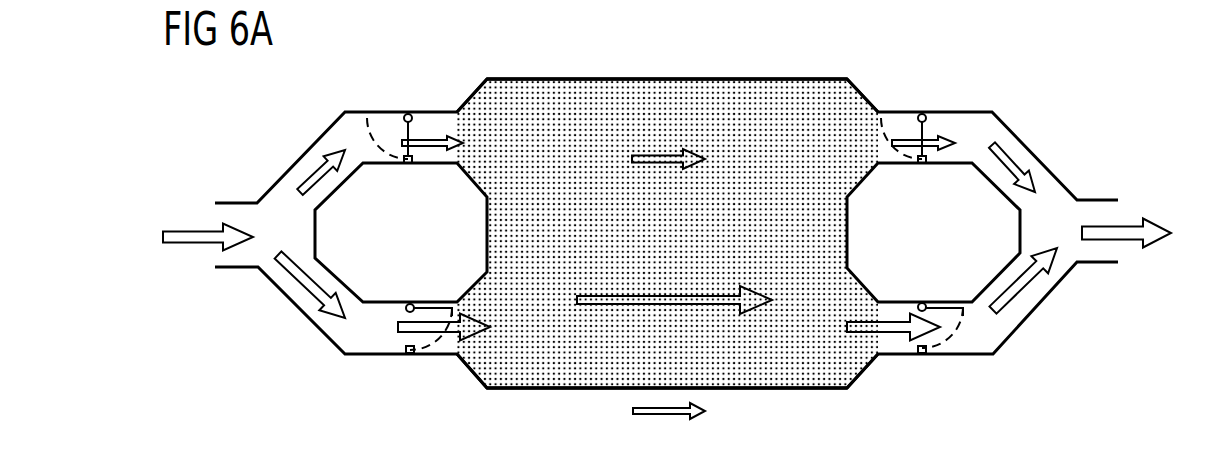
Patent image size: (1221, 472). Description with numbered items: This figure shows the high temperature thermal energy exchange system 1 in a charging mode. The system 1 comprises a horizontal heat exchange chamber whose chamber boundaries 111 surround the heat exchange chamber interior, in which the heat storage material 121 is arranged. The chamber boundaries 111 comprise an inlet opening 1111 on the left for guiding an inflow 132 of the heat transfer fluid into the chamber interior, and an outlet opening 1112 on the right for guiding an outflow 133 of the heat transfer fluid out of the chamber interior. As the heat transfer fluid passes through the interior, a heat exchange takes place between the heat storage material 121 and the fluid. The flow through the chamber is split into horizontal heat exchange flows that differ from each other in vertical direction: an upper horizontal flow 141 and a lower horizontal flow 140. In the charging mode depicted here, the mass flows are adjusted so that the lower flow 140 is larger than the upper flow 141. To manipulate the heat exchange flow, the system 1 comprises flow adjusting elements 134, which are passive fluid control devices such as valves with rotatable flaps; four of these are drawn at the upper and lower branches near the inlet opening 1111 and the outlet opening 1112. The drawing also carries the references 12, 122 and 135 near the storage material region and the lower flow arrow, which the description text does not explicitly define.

The high temperature thermal energy exchange system 1 is at (1141, 66).
The filter element 12 is at (536, 92).
The chamber boundaries 111 is at (483, 78).
The heat storage material 121 is at (577, 92).
The second filter side 122 is at (640, 95).
The inlet opening 1111 is at (437, 120).
The outlet opening 1112 is at (890, 75).
The inflow 132 is at (184, 230).
The outflow 133 is at (1148, 225).
The flow adjusting element 134 is at (400, 110).
The filtration flow direction 135 is at (632, 411).
The lower horizontal heat exchange flow 140 is at (733, 300).
The upper horizontal heat exchange flow 141 is at (680, 152).